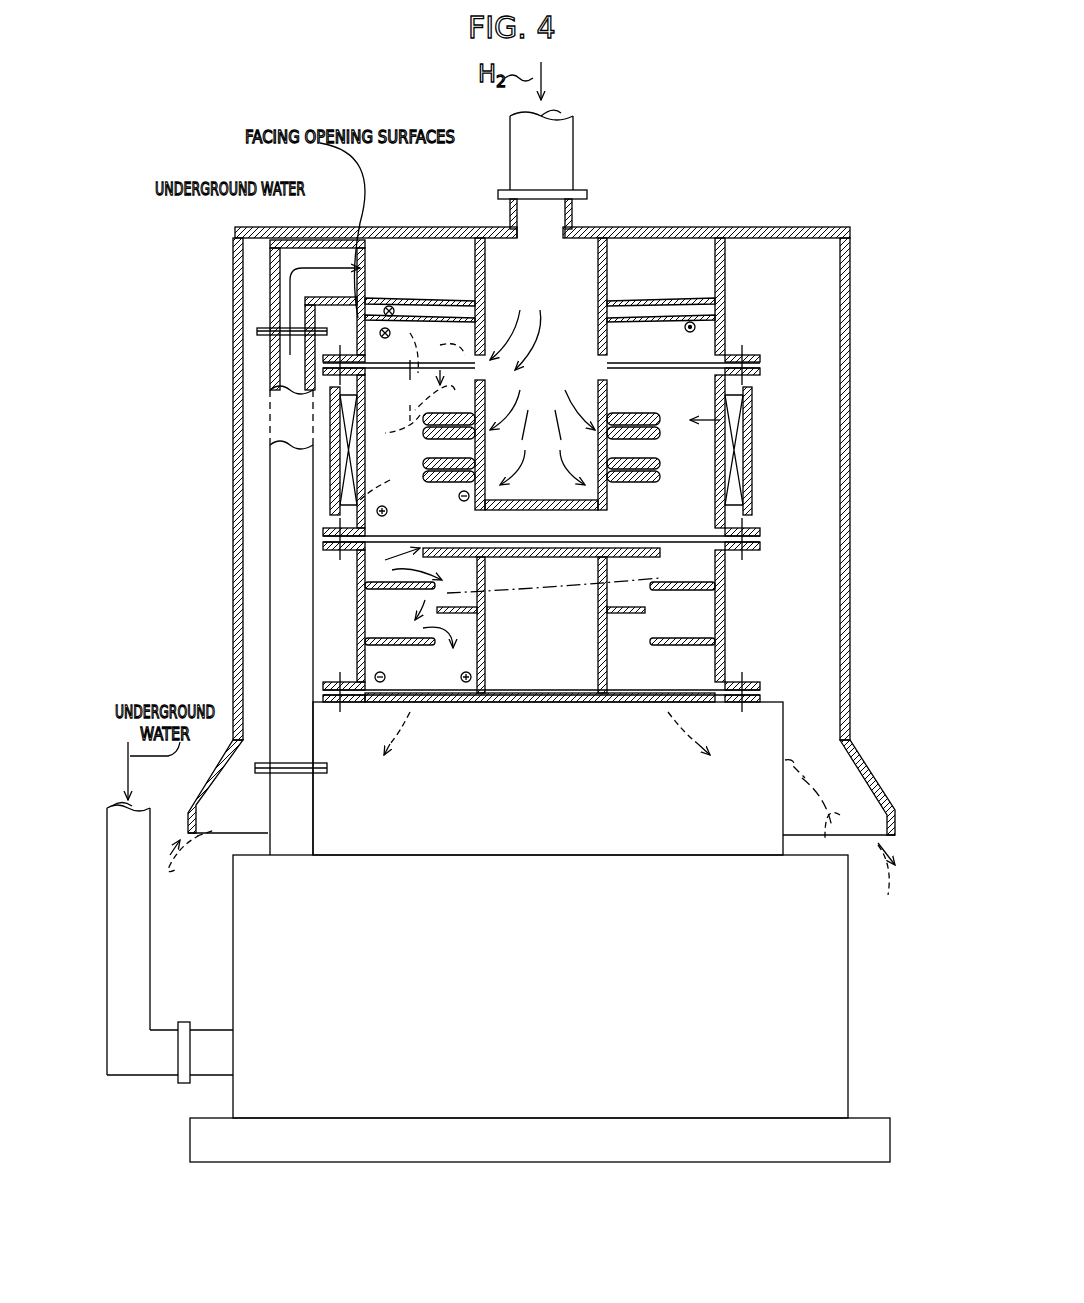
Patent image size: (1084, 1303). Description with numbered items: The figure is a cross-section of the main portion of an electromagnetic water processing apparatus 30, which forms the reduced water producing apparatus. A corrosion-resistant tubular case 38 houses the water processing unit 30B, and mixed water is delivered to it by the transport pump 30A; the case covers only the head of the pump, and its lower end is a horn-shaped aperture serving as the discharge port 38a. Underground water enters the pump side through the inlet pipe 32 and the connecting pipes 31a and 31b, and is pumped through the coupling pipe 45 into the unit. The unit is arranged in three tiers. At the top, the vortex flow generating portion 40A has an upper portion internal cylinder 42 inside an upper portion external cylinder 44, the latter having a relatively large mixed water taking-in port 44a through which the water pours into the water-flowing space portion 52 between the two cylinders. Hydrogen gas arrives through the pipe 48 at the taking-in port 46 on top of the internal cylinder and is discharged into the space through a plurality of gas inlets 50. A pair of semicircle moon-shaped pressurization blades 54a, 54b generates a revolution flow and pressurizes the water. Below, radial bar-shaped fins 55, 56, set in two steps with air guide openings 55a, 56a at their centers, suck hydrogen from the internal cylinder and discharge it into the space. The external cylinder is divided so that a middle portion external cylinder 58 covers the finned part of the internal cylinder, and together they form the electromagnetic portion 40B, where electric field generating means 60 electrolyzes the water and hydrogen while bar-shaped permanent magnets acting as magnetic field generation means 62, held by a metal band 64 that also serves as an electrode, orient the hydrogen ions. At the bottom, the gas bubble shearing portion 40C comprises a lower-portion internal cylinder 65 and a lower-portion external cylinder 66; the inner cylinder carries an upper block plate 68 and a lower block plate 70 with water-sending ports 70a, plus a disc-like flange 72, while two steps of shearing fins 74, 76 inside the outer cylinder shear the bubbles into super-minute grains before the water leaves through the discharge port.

The electromagnetic water processing apparatus 30 is at (708, 133).
The transport pump 30A is at (914, 1010).
The water processing unit 30B is at (805, 275).
The water supply pipe 31a is at (212, 1028).
The water riser pipe 31b is at (313, 815).
The underground water inlet pipe 32 is at (150, 925).
The tubular case 38 is at (233, 310).
The discharge port 38a is at (877, 840).
The vortex flow generating portion 40A is at (736, 322).
The electromagnetic portion 40B is at (843, 458).
The gas bubble shearing portion 40C is at (740, 620).
The upper portion internal cylinder 42 is at (607, 255).
The upper portion external cylinder 44 is at (725, 272).
The mixed water taking-in port 44a is at (347, 248).
The coupling pipe 45 is at (270, 520).
The taking-in port for hydrogen gas 46 is at (577, 208).
The pipe 48 is at (517, 158).
The gas inlets 50 is at (475, 353).
The water-flowing space portion 52 is at (433, 330).
The pressurization blade 54a is at (438, 305).
The pressurization blade 54b is at (650, 298).
The bar-shaped fins 55 is at (475, 413).
The air guide opening 55a is at (637, 427).
The bar-shaped fins 56 is at (643, 482).
The air guide opening 56a is at (442, 470).
The middle portion external cylinder 58 is at (715, 390).
The electric field generating means 60 is at (708, 470).
The magnetic field generation means 62 is at (330, 430).
The metal band 64 is at (752, 490).
The lower-portion internal cylinder 65 is at (598, 645).
The lower-portion external cylinder 66 is at (725, 652).
The upper block plate 68 is at (546, 548).
The lower block plate 70 is at (542, 702).
The water-sending ports 70a is at (445, 712).
The flange 72 is at (645, 611).
The shearing fins 74 is at (665, 583).
The shearing fins 76 is at (660, 657).